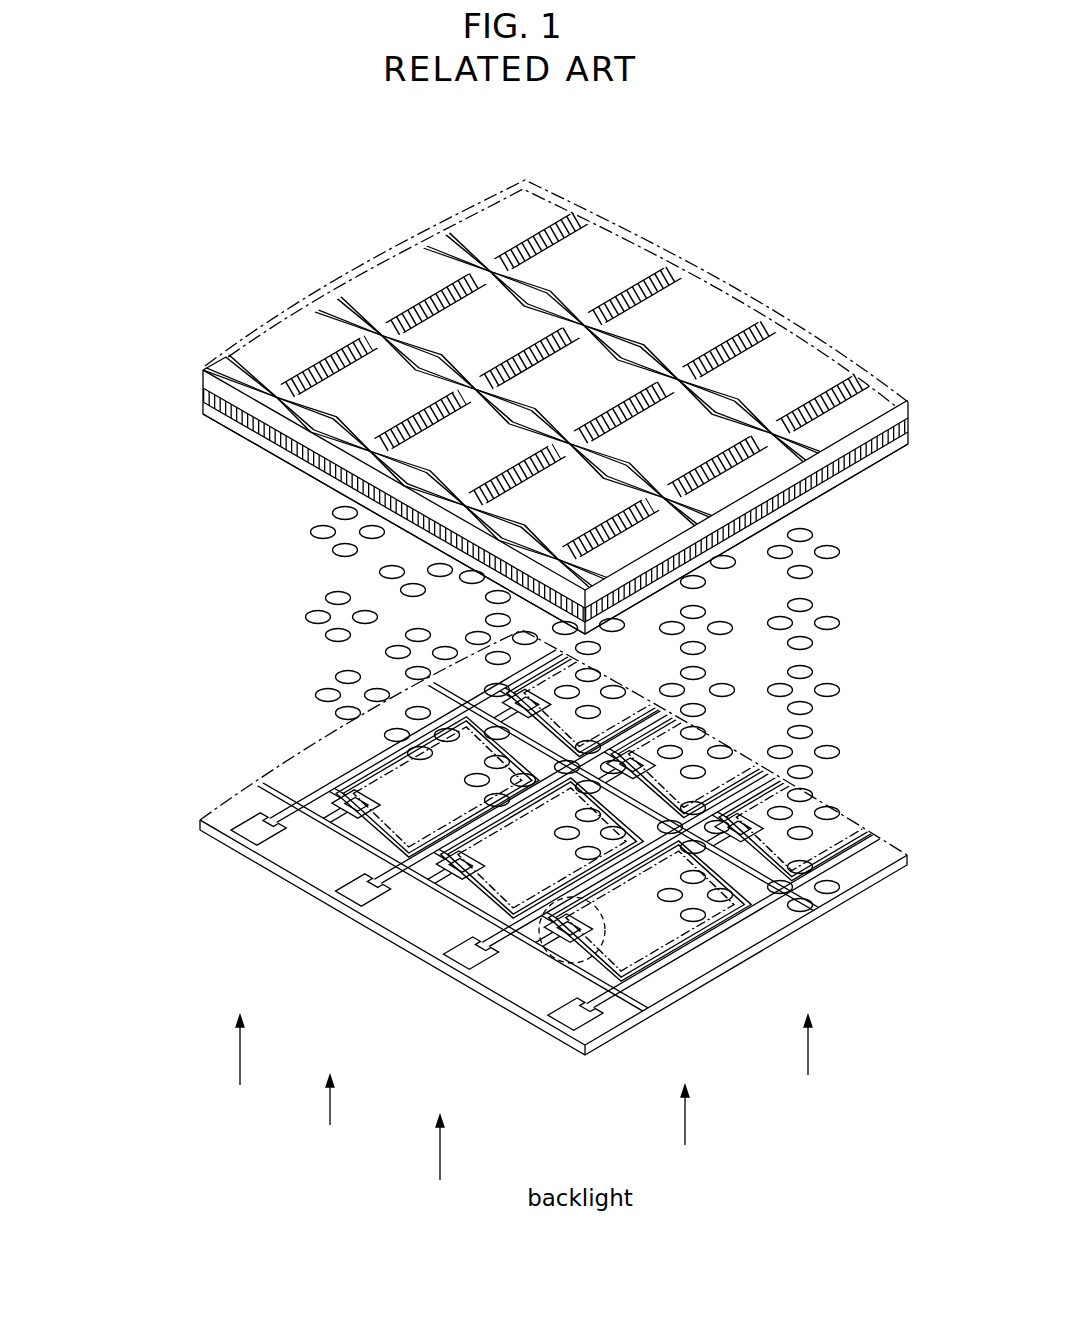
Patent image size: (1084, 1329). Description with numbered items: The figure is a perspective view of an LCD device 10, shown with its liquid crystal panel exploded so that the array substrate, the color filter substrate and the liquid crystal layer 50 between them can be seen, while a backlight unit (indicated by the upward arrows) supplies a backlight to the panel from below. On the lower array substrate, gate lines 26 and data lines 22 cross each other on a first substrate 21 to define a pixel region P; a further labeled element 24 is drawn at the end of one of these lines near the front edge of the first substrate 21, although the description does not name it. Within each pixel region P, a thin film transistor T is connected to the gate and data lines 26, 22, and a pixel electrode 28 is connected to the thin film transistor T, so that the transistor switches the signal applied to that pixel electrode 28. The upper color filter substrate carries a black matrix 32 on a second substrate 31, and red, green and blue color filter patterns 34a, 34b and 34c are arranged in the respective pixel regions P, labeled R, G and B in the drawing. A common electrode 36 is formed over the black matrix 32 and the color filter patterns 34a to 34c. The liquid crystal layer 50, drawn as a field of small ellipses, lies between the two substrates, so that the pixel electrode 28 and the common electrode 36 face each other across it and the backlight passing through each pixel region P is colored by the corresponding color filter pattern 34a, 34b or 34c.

The LCD device 10 is at (790, 163).
The first substrate 21 is at (466, 1002).
The data line 22 is at (690, 960).
The gate pad 24 is at (565, 1020).
The gate line 26 is at (625, 1000).
The pixel electrode 28 is at (760, 958).
The second substrate 31 is at (203, 366).
The black matrix 32 is at (203, 386).
The red color filter pattern 34a is at (557, 205).
The green color filter pattern 34b is at (643, 255).
The blue color filter pattern 34c is at (722, 303).
The common electrode 36 is at (300, 460).
The liquid crystal layer 50 is at (838, 686).
The pixel region P is at (440, 910).
The thin film transistor T is at (555, 950).